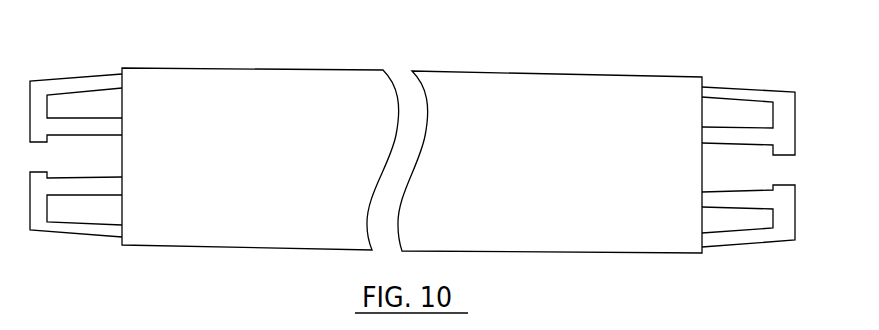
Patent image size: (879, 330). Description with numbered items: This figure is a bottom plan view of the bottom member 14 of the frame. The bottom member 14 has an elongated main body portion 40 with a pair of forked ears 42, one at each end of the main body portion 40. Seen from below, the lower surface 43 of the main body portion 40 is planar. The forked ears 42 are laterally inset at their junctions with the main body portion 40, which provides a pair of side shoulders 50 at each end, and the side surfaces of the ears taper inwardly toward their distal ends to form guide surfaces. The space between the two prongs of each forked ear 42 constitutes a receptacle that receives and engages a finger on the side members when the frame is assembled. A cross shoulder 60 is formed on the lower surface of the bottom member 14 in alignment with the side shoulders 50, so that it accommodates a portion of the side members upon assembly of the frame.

The bottom member 14 is at (412, 137).
The main body portion 40 is at (530, 73).
The lower surface 43 is at (272, 170).
The forked ears 42 is at (752, 87).
The side shoulders 50 is at (713, 75).
The cross shoulder 60 is at (702, 157).